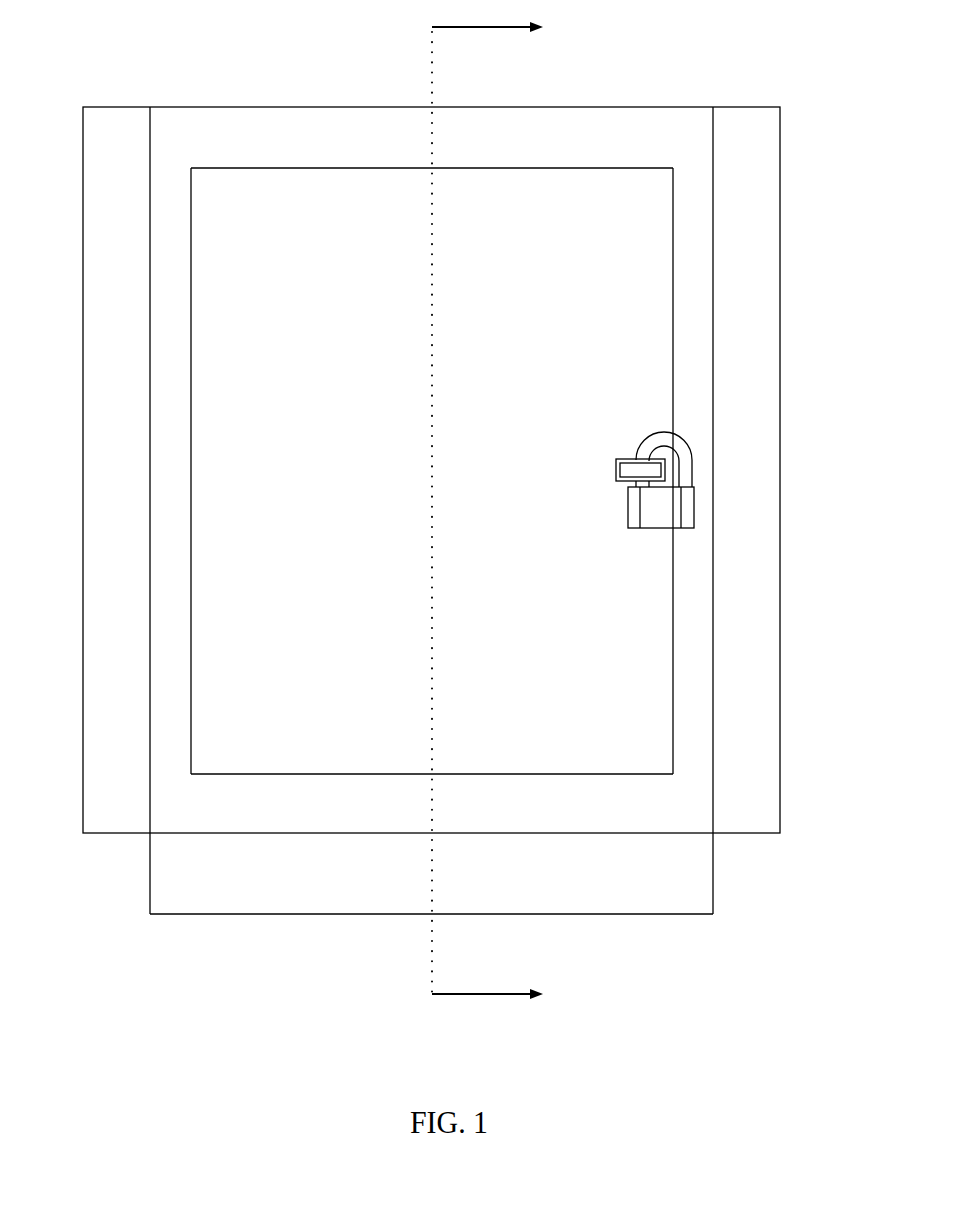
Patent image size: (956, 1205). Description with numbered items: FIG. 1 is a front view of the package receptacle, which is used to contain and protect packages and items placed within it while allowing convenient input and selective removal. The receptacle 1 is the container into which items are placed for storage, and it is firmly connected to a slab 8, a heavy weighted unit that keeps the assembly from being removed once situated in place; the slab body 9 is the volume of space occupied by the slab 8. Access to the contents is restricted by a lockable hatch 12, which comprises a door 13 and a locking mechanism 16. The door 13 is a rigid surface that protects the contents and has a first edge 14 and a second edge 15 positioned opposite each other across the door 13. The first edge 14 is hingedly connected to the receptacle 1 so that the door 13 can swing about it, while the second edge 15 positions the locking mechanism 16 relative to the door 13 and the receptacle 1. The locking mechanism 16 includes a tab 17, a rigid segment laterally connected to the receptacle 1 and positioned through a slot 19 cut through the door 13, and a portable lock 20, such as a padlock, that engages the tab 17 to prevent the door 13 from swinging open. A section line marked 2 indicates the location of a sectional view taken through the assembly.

The receptacle 1 is at (132, 58).
The section line 2- 2 is at (502, 513).
The slab 8 is at (138, 925).
The slab body 9 is at (343, 883).
The lockable hatch 12 is at (692, 715).
The door 13 is at (318, 520).
The first edge 14 is at (191, 321).
The second edge 15 is at (674, 262).
The locking mechanism 16 is at (655, 422).
The tab 17 is at (630, 467).
The slot 19 is at (620, 481).
The portable lock 20 is at (687, 510).